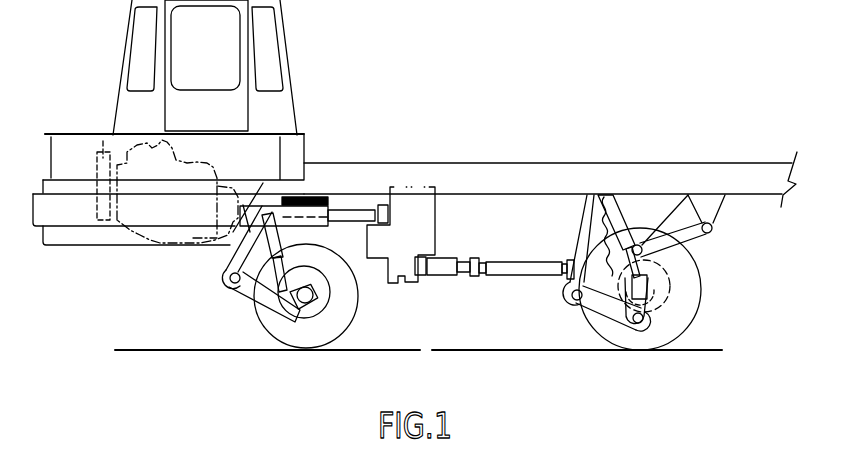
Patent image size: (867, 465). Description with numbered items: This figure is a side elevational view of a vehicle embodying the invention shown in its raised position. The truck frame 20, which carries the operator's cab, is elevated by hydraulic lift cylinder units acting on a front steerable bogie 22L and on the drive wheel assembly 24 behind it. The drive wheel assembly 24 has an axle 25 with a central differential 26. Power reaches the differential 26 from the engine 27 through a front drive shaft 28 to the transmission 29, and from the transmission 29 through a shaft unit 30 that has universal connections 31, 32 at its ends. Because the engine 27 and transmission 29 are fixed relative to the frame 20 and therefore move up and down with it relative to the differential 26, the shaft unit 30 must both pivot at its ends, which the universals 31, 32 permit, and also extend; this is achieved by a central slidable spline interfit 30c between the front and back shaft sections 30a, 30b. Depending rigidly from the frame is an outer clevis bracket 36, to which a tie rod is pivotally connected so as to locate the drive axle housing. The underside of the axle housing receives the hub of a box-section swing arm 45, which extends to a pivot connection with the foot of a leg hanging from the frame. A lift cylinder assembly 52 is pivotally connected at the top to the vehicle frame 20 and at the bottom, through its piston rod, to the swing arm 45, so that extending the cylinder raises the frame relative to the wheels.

The truck frame 20 is at (470, 163).
The front steerable bogie 22L is at (270, 336).
The drive wheel assembly 24 is at (684, 330).
The axle 25 is at (676, 263).
The central differential 26 is at (671, 299).
The engine 27 is at (142, 205).
The front drive shaft 28 is at (347, 214).
The transmission 29 is at (391, 285).
The shaft unit 30 is at (500, 257).
The front shaft section 30a is at (446, 257).
The back shaft section 30b is at (545, 275).
The central slidable spline interfit 30c is at (476, 257).
The universal connection 31 is at (421, 274).
The universal connection 32 is at (568, 283).
The outer clevis bracket 36 is at (721, 205).
The swing arm 45 is at (607, 307).
The lift cylinder assembly 52 is at (617, 207).